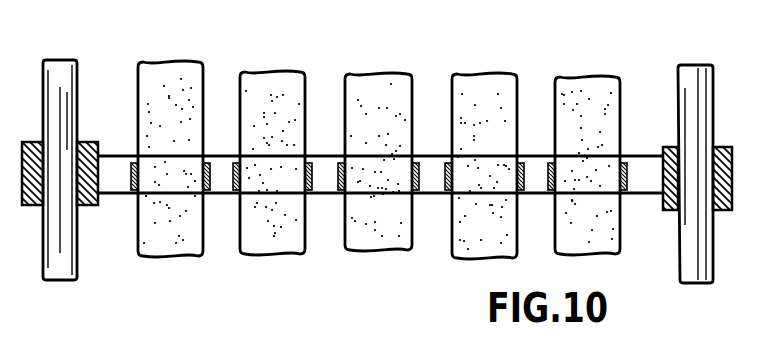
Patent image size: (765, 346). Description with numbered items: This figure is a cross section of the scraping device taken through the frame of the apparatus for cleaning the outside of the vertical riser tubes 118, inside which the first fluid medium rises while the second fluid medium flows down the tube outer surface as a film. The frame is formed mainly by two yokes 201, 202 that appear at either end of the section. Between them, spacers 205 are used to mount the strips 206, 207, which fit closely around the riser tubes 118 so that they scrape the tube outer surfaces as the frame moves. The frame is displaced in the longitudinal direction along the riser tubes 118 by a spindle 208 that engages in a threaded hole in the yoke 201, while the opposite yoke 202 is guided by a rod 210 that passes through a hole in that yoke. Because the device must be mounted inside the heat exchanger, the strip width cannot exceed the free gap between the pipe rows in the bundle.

The riser tubes 118 is at (258, 78).
The yoke 201 is at (92, 205).
The yoke 202 is at (669, 206).
The spacers 205 is at (113, 163).
The strip 206 is at (133, 188).
The strip 207 is at (208, 193).
The spindle 208 is at (63, 78).
The rod 210 is at (690, 78).